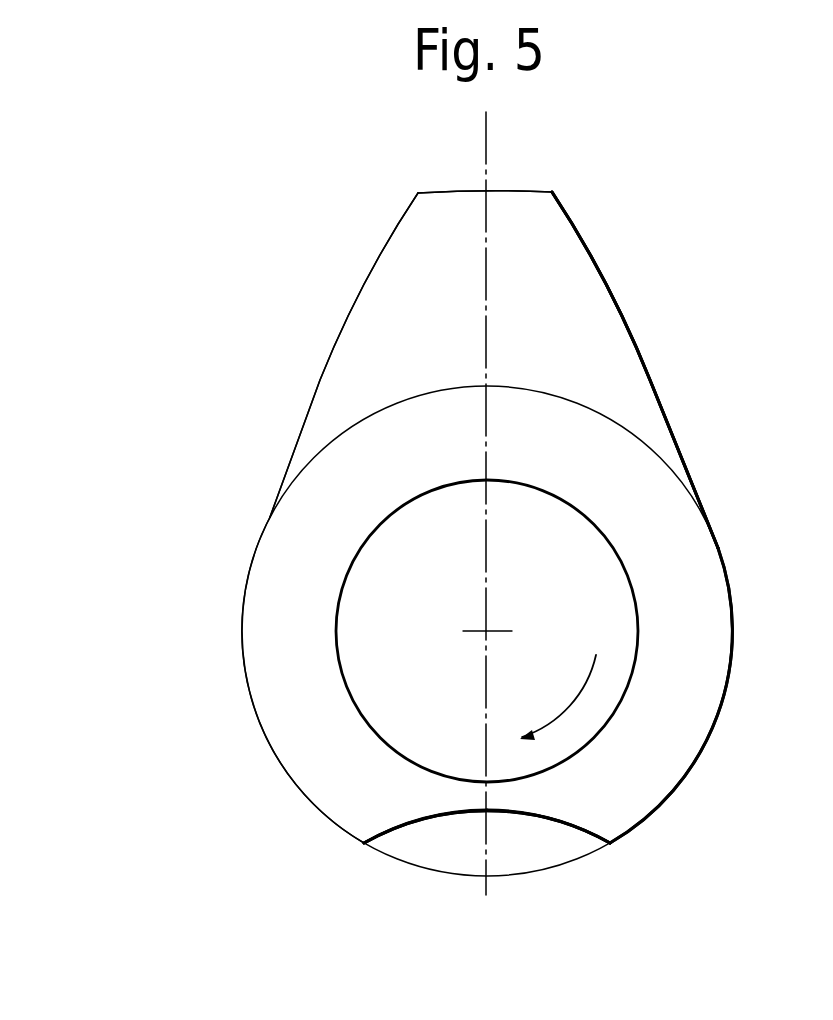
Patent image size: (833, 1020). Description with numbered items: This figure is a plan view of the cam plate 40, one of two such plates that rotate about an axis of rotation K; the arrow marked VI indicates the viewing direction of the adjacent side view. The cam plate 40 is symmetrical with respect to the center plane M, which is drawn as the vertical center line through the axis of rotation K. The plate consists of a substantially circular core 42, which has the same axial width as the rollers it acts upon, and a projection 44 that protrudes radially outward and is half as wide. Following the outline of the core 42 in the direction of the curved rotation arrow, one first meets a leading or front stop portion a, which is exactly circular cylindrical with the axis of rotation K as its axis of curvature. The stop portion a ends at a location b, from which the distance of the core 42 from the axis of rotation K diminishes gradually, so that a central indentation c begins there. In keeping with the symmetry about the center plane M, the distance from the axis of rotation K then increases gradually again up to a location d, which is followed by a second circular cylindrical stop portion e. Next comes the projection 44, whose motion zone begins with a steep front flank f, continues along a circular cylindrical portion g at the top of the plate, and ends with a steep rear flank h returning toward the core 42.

The cam plate 40 is at (690, 303).
The core 42 is at (697, 568).
The projection 44 is at (554, 256).
The center plane M is at (482, 143).
The axis of rotation K is at (490, 628).
The view direction arrow VI is at (215, 499).
The front stop portion a is at (245, 679).
The location b is at (362, 848).
The central indentation c is at (476, 817).
The location d is at (611, 850).
The stop portion e is at (729, 702).
The front flank f is at (655, 362).
The circular cylindrical portion g is at (492, 188).
The rear flank h is at (331, 347).